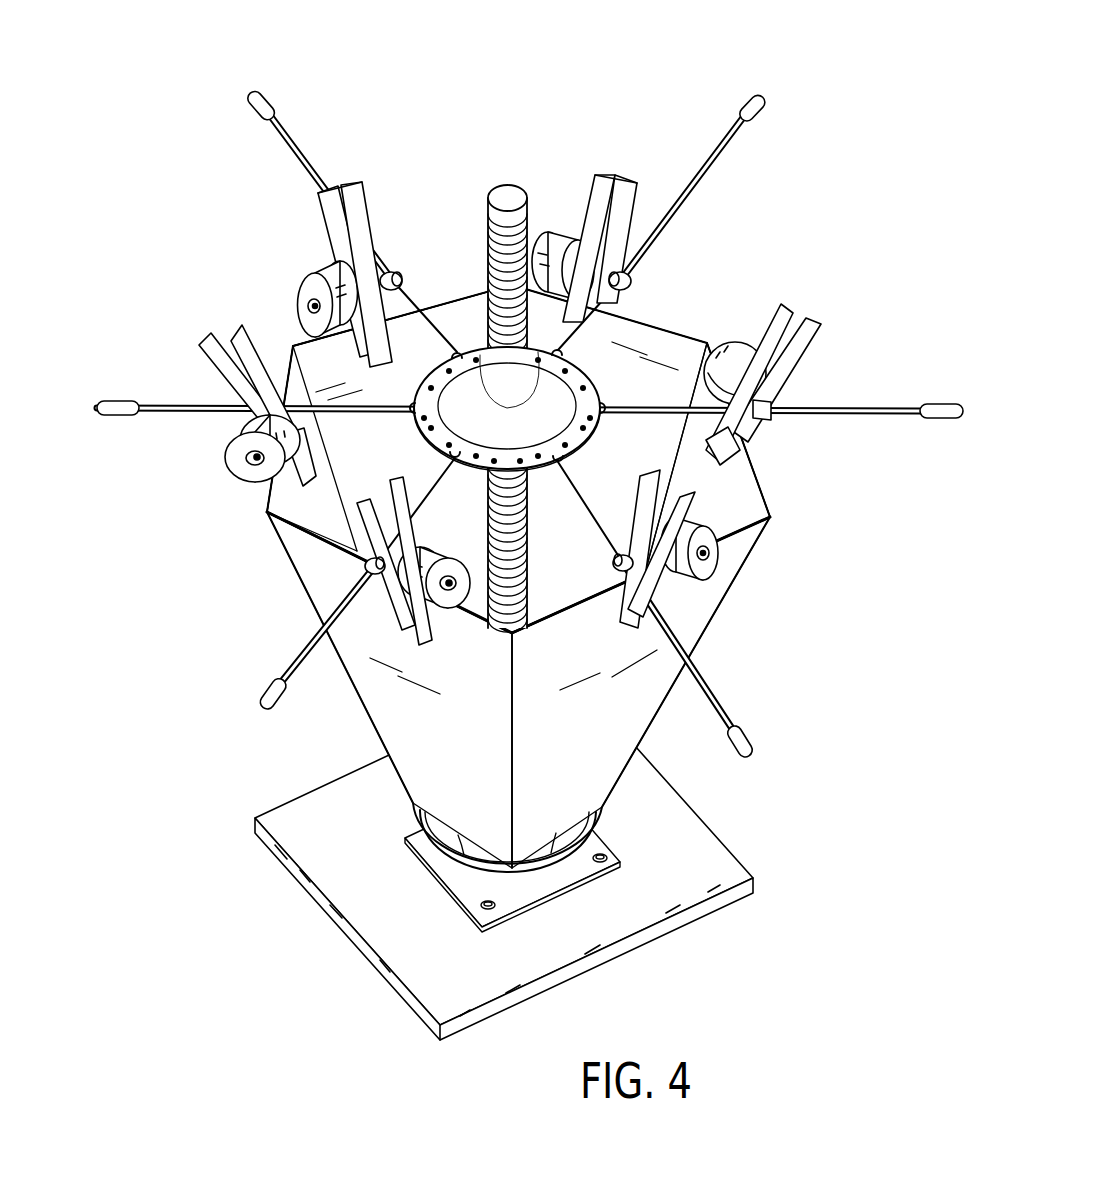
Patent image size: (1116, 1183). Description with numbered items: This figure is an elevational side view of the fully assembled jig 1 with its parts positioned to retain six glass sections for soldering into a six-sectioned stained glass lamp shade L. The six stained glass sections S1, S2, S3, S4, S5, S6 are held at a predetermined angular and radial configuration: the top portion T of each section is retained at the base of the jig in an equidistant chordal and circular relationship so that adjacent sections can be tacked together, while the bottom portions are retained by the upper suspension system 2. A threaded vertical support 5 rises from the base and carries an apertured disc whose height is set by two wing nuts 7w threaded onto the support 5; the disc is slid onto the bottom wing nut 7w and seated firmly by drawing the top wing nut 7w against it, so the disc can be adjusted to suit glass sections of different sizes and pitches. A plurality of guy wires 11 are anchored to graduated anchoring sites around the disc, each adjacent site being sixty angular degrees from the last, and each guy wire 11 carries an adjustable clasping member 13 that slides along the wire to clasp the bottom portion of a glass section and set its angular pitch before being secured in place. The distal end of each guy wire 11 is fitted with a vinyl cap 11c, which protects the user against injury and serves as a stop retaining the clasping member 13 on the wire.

The jig 1 is at (525, 82).
The upper suspension system 2 is at (608, 407).
The vertical support 5 is at (480, 183).
The wing nut 7w is at (438, 403).
The guy wire 11 is at (846, 398).
The vinyl cap 11c is at (752, 80).
The clasping member 13 is at (582, 190).
The stained glass lamp shade L is at (790, 517).
The first stained glass section S1 is at (385, 698).
The second stained glass section S2 is at (622, 712).
The third stained glass section S3 is at (742, 494).
The fourth stained glass section S4 is at (645, 340).
The fifth stained glass section S5 is at (320, 358).
The sixth stained glass section S6 is at (288, 497).
The top portion T is at (455, 856).